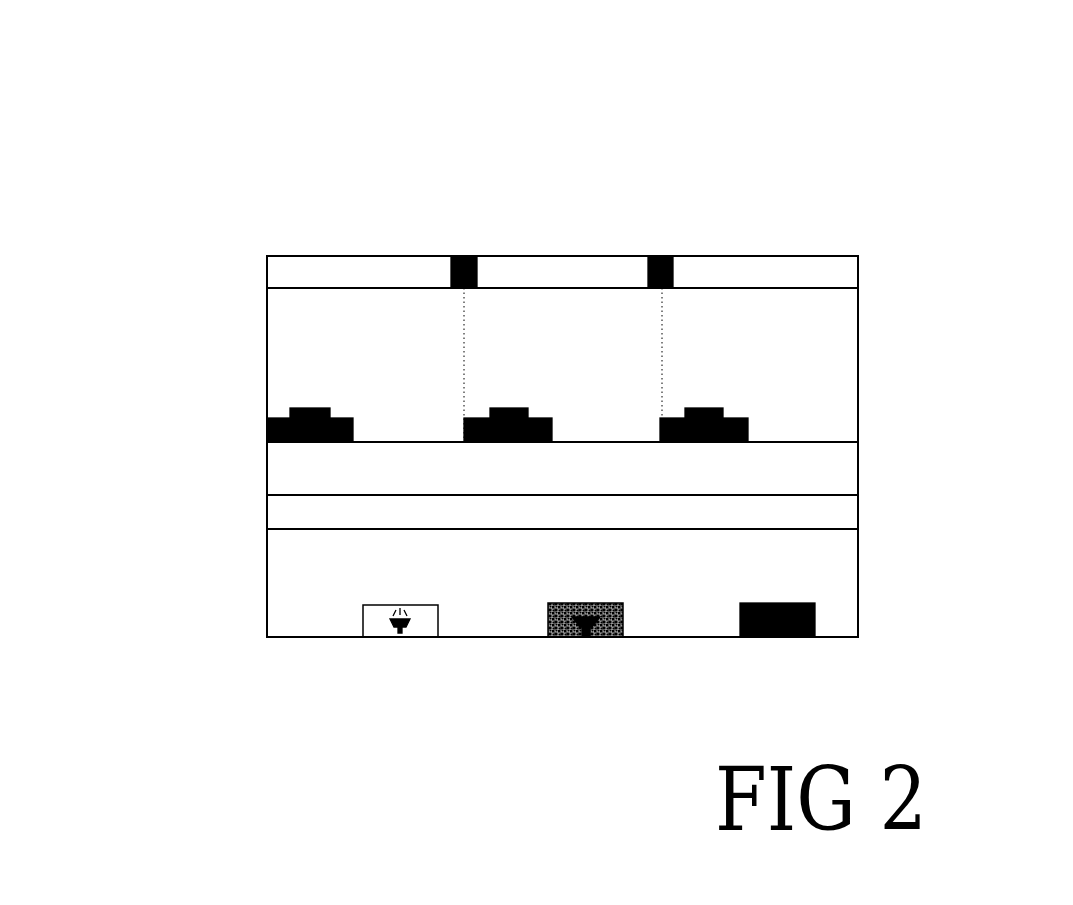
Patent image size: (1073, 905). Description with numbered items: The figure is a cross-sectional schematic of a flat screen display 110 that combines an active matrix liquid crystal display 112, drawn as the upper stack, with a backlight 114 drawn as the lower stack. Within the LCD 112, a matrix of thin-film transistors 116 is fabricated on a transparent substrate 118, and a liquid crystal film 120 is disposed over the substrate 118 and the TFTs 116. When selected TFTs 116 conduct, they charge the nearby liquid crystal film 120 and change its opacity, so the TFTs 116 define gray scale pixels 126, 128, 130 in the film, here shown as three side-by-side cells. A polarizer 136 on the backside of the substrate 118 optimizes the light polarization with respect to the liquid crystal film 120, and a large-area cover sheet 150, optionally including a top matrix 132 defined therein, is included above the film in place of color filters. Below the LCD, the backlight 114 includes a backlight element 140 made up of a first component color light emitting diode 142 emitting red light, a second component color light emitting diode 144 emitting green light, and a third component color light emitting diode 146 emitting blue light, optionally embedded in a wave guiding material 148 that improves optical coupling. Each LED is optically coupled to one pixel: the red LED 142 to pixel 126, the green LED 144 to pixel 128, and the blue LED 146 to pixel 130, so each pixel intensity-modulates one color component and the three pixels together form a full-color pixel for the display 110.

The flat screen display 110 is at (925, 214).
The active matrix liquid crystal display 112 is at (257, 256).
The backlight 114 is at (257, 531).
The thin-film transistor 116 is at (343, 418).
The substrate 118 is at (843, 466).
The liquid crystal film 120 is at (858, 378).
The pixel 126 is at (384, 362).
The pixel 128 is at (574, 362).
The pixel 130 is at (767, 362).
The top matrix 132 is at (464, 256).
The polarizer 136 is at (848, 512).
The backlight element 140 is at (825, 637).
The first component color light emitting diode 142 is at (378, 605).
The second component color light emitting diode 144 is at (573, 603).
The third component color light emitting diode 146 is at (757, 603).
The wave guiding material 148 is at (850, 590).
The cover sheet 150 is at (853, 272).